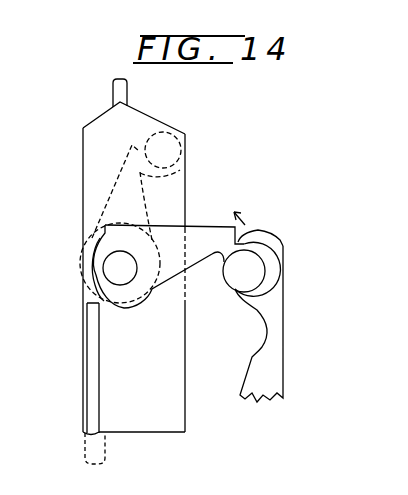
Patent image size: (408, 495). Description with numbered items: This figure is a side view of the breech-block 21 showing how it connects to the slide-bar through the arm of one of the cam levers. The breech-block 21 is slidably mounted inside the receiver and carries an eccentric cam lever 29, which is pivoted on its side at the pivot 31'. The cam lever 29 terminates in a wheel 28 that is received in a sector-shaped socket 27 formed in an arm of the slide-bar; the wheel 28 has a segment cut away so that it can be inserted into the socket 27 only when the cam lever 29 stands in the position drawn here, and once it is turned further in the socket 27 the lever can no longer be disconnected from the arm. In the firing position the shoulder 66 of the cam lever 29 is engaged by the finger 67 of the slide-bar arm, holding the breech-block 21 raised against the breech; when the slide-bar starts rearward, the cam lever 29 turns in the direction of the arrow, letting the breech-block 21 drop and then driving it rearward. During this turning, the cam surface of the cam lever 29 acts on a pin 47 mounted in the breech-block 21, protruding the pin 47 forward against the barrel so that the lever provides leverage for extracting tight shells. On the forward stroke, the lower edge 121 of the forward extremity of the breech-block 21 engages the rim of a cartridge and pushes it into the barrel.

The breech-block 21 is at (132, 257).
The lower edge 121 is at (178, 434).
The pin 47 is at (88, 447).
The eccentric cam lever 29 is at (202, 238).
The pivot 31' is at (120, 268).
The wheel 28 is at (244, 271).
The sector-shaped socket 27 is at (273, 269).
The finger 67 is at (264, 232).
The shoulder 66 is at (251, 216).